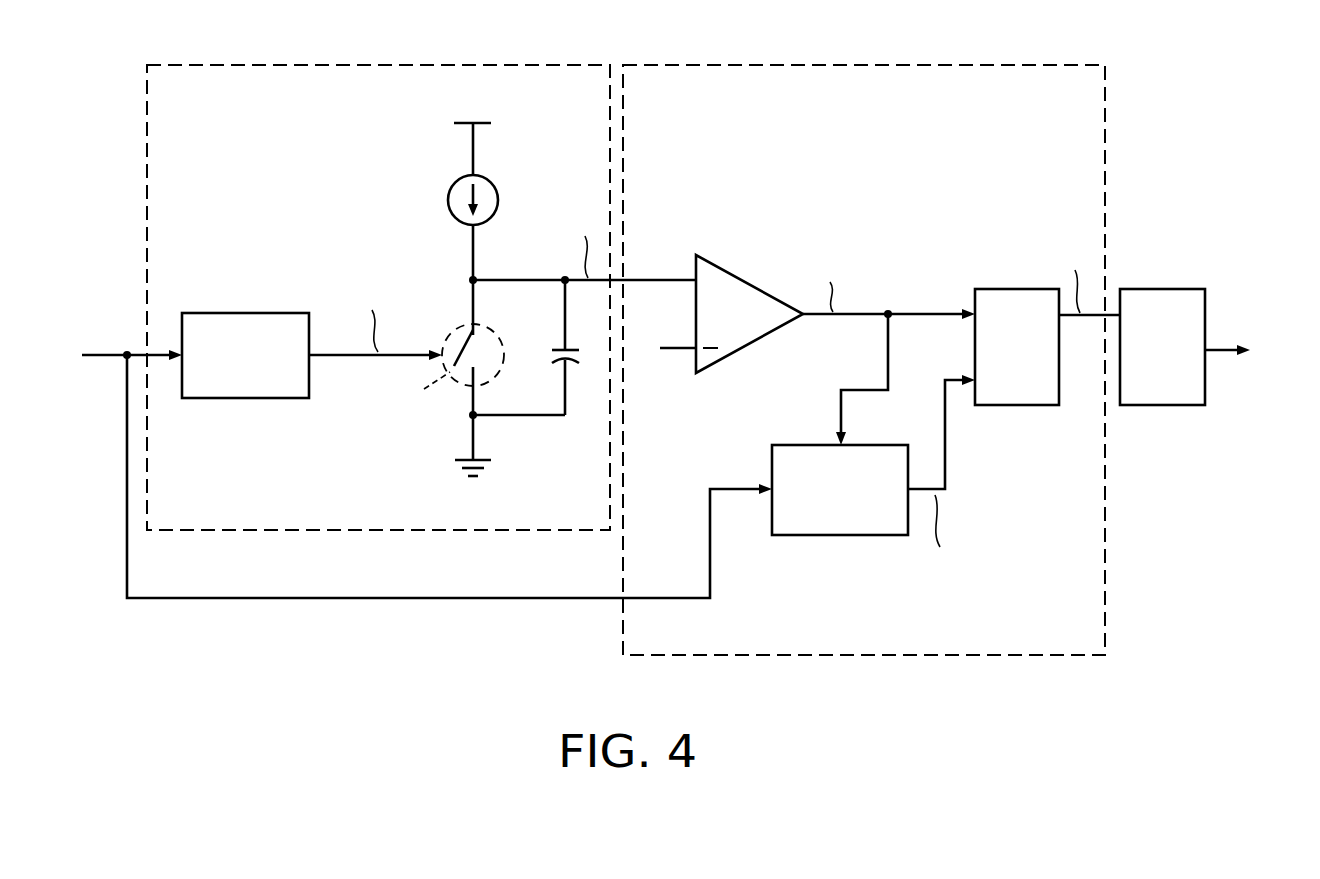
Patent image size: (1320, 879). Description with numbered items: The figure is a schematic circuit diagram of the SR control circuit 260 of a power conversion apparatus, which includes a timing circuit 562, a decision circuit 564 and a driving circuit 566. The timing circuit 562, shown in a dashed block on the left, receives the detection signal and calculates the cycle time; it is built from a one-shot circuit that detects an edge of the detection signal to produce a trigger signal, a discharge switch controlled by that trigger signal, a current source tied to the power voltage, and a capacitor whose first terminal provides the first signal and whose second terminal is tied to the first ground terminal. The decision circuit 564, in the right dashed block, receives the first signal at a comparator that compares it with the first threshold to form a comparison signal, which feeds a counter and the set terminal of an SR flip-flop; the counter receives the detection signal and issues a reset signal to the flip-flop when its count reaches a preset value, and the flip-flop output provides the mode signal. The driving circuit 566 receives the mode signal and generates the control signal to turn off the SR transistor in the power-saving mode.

The SR control circuit 260 is at (1291, 708).
The timing circuit 562 is at (511, 65).
The decision circuit 564 is at (1000, 65).
The driving circuit 566 is at (1165, 289).